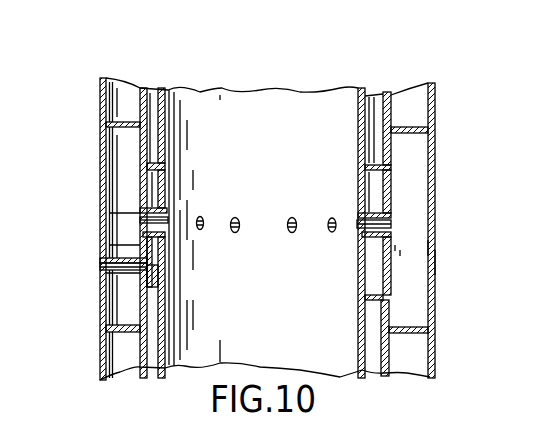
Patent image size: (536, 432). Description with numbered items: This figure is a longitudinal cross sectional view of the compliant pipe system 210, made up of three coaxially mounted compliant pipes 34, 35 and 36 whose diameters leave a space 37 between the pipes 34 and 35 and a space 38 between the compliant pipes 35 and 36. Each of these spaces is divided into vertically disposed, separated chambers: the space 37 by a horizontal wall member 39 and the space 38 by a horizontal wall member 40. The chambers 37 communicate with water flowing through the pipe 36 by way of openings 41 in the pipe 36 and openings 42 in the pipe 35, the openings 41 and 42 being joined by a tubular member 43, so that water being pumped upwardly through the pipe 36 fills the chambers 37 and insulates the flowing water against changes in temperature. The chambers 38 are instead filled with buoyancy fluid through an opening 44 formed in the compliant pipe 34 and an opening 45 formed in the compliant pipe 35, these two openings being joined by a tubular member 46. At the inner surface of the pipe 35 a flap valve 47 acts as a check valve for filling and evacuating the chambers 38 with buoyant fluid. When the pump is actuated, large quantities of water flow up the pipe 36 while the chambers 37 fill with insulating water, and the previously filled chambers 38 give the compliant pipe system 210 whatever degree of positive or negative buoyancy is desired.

The compliant pipe 34 is at (100, 199).
The compliant pipe 35 is at (145, 148).
The compliant pipe 36 is at (168, 140).
The space 37 is at (434, 150).
The space 38 is at (372, 100).
The horizontal wall member 39 is at (426, 128).
The horizontal wall member 40 is at (365, 214).
The openings 41 is at (200, 230).
The openings 42 is at (391, 232).
The tubular member 43 is at (392, 192).
The opening 44 is at (100, 270).
The opening 45 is at (168, 232).
The tubular member 46 is at (112, 235).
The flap valve 47 is at (165, 265).
The compliant pipe system 210 is at (444, 251).